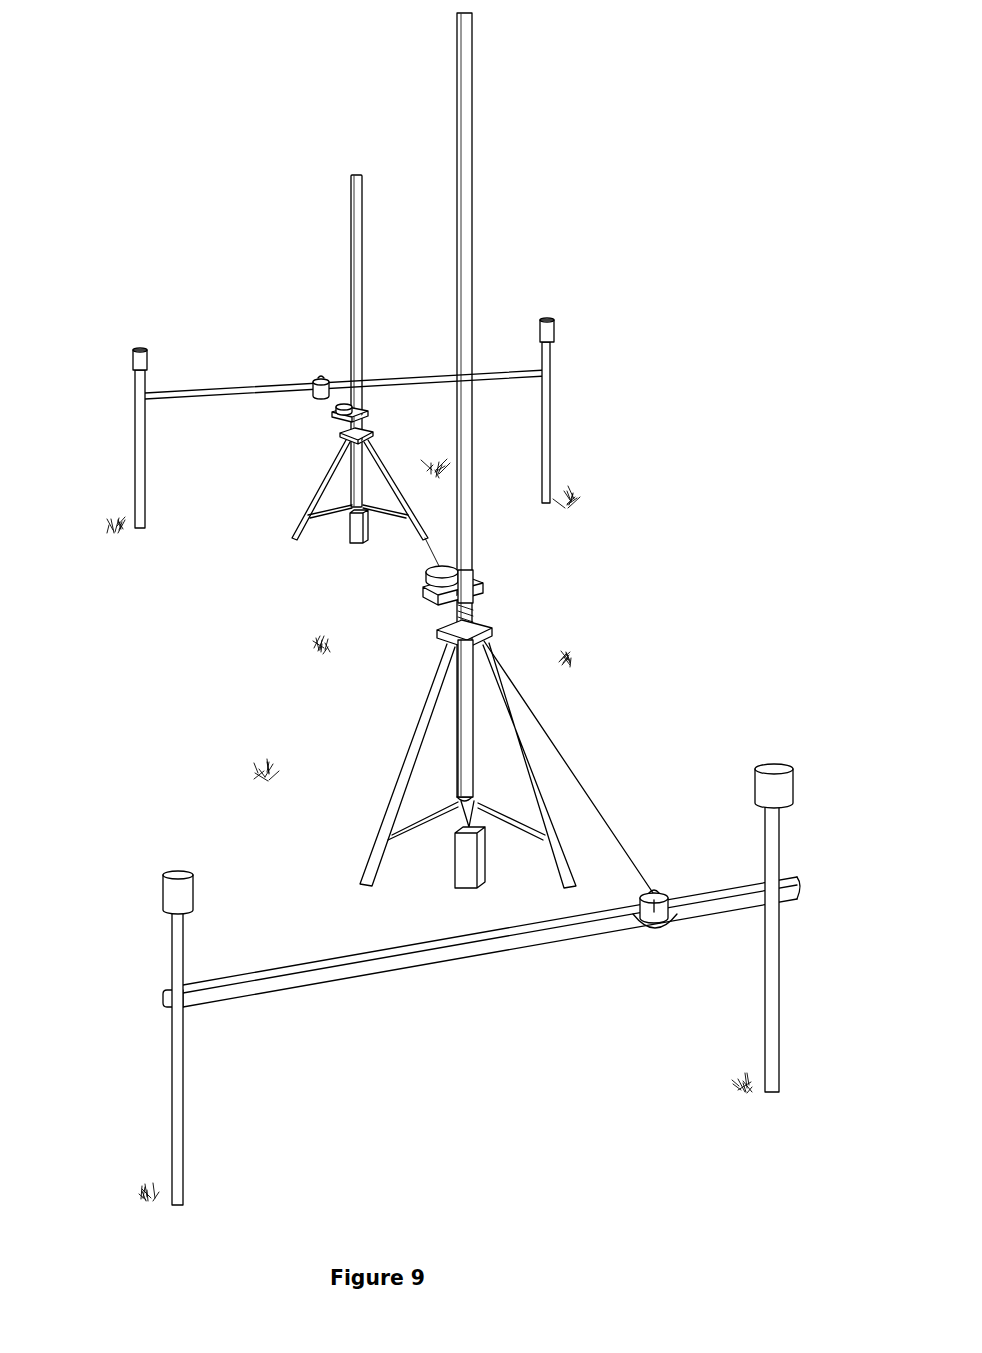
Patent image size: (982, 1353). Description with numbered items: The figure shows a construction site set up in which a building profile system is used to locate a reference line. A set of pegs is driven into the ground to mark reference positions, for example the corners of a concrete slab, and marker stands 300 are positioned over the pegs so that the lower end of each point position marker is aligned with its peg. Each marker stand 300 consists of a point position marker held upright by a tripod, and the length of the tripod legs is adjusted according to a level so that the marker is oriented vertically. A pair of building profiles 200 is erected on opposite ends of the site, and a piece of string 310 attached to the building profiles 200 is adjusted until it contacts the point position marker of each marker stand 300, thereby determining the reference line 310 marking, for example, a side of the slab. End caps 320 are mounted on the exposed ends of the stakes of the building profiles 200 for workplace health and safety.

The building profile 200 is at (423, 745).
The marker stand 300 is at (444, 470).
The reference line 310 is at (570, 763).
The end cap 320 is at (555, 318).